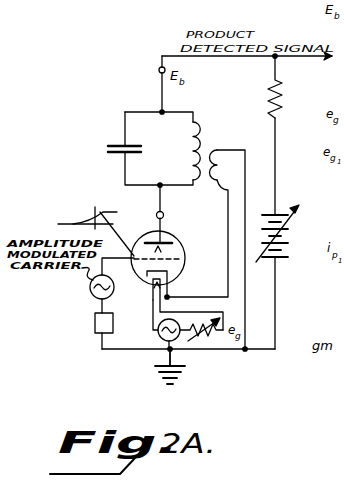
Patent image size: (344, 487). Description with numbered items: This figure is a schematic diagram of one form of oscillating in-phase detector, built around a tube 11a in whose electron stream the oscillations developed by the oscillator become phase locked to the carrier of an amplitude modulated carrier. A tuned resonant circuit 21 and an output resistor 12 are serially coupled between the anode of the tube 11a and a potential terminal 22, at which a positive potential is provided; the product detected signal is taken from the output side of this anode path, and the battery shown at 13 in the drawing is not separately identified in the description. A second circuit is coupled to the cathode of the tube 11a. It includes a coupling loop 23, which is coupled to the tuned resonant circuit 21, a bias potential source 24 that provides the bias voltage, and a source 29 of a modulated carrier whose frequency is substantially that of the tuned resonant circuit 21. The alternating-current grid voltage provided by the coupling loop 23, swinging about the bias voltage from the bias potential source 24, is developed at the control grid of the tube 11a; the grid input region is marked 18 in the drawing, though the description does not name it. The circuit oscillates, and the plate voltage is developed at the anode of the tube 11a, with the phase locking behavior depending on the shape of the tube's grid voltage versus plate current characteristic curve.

The potential terminal 22 is at (158, 70).
The tuned resonant circuit 21 is at (150, 163).
The coupling loop 23 is at (216, 152).
The output resistor 12 is at (282, 98).
The plate battery 13 is at (285, 244).
The tube 11a is at (177, 238).
The control grid input 18 is at (112, 212).
The source of a modulated carrier 29 is at (113, 294).
The bias potential source 24 is at (95, 325).